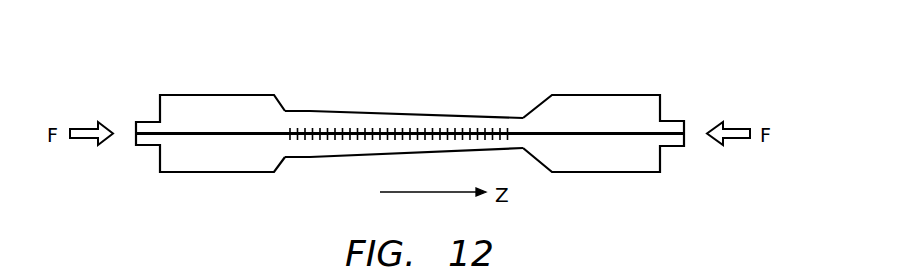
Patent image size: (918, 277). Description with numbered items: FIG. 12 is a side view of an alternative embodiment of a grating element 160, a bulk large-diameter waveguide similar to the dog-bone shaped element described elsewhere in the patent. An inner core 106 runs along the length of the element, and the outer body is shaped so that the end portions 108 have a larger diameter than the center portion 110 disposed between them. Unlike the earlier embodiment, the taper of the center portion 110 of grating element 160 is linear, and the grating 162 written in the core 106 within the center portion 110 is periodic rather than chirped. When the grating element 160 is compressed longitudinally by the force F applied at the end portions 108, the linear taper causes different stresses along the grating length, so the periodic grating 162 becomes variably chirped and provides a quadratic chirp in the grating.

The inner core 106 is at (195, 135).
The end portions 108 is at (192, 95).
The center portion 110 is at (309, 110).
The grating element 160 is at (483, 80).
The grating 162 is at (358, 135).